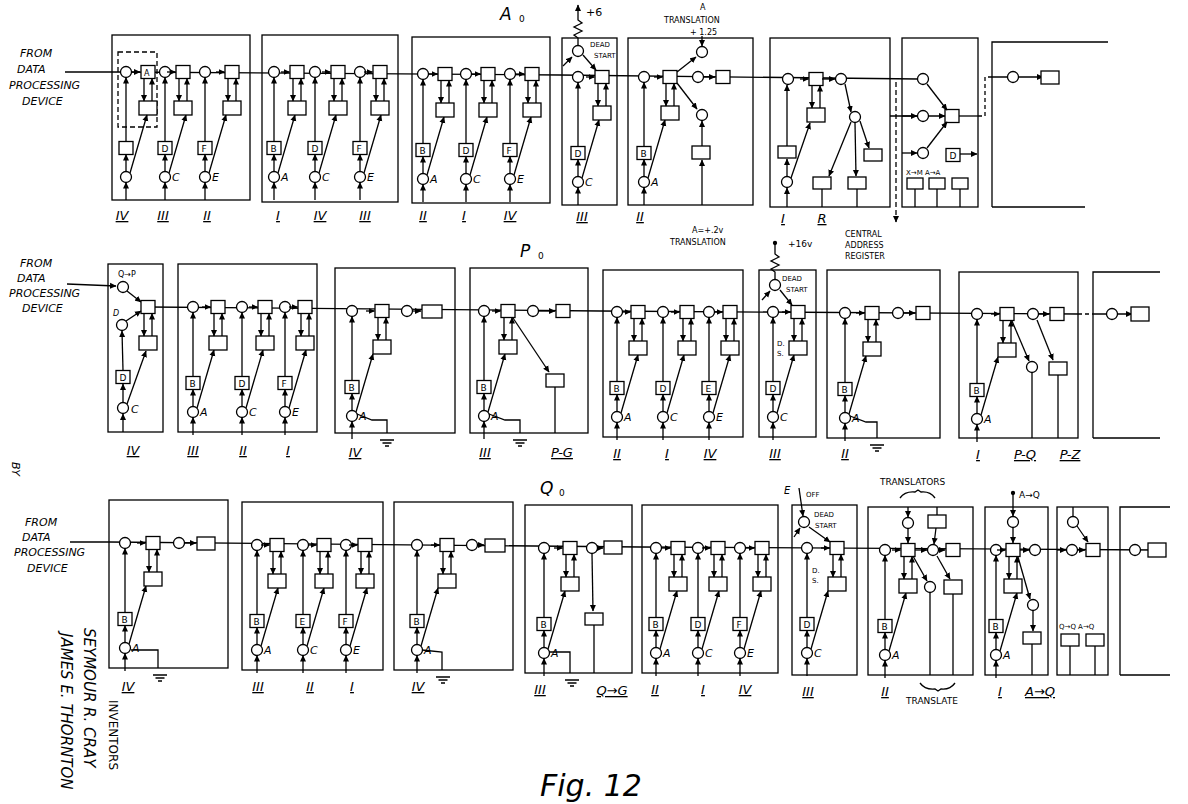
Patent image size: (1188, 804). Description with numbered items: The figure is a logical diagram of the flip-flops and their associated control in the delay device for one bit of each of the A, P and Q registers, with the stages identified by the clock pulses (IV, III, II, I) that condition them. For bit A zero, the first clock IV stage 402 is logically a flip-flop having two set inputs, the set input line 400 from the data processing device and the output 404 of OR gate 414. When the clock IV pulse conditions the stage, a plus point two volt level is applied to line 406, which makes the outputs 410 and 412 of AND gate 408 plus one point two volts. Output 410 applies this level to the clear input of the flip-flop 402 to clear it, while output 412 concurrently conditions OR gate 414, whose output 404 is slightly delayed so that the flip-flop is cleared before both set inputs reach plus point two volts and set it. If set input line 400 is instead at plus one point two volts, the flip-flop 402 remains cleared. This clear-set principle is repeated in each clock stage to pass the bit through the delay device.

The set input line 400 is at (97, 67).
The first clock IV stage flip-flop 402 is at (158, 53).
The output of OR gate 404 is at (128, 128).
The output of AND gate 410 is at (128, 133).
The OR gate 414 is at (118, 147).
The output of AND gate 412 is at (123, 163).
The AND gate 408 is at (120, 180).
The clock line 406 is at (116, 198).